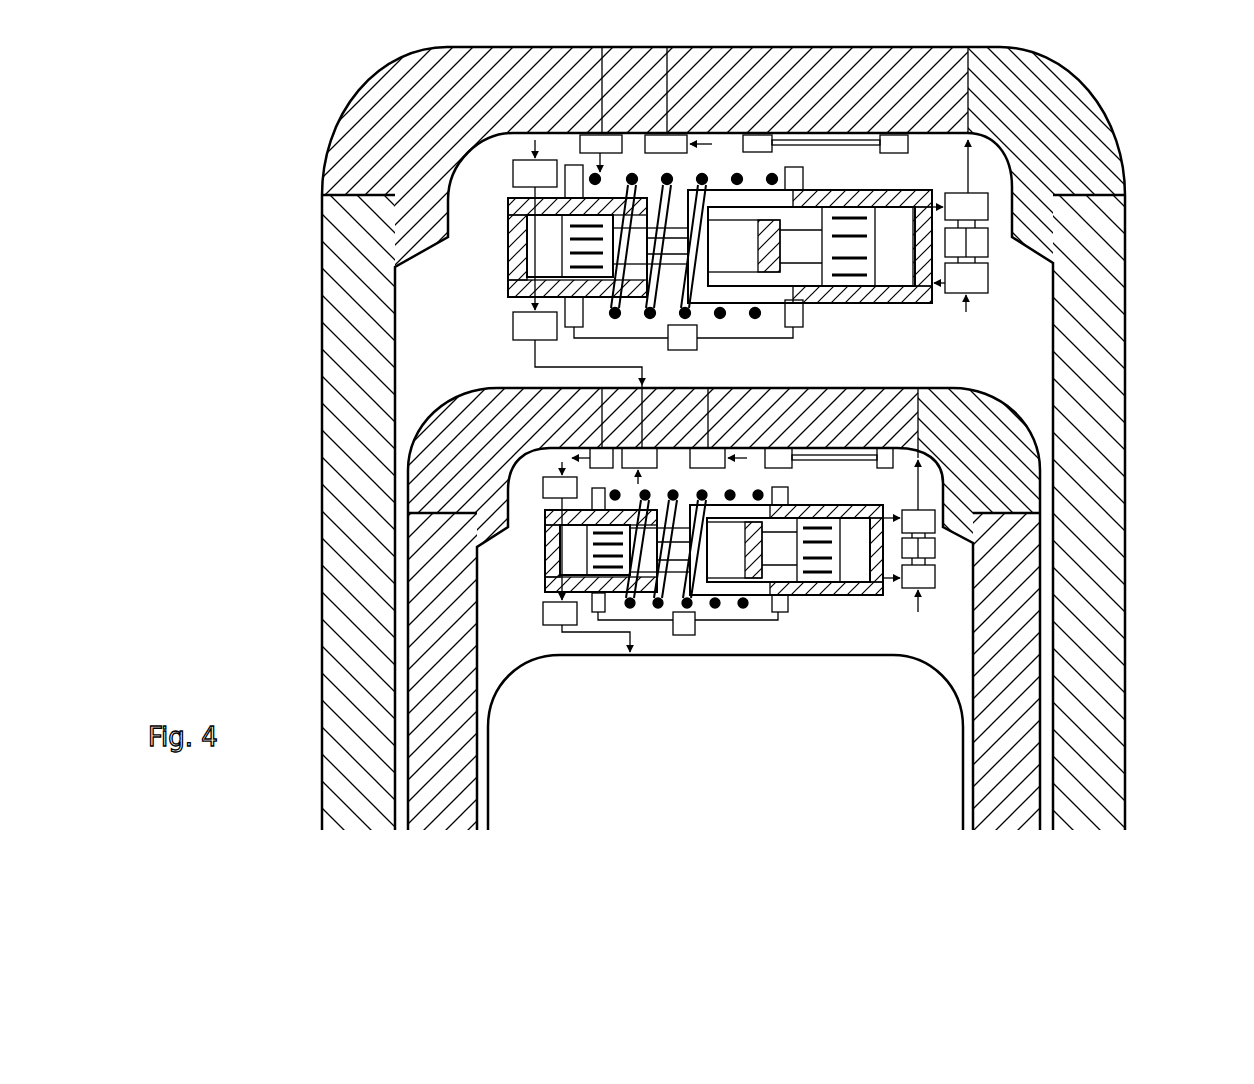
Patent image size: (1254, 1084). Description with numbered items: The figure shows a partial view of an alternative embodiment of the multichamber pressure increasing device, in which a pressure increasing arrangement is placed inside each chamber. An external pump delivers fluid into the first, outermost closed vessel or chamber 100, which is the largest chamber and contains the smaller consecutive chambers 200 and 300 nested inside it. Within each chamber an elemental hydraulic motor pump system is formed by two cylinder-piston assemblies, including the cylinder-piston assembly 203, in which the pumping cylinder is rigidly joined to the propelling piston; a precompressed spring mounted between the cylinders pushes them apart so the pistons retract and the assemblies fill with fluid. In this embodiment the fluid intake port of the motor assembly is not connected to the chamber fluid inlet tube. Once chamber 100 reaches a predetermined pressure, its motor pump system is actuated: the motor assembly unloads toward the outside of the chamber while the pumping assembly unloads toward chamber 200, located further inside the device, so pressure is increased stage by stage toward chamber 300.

The first, outermost closed vessel or chamber 100 is at (1067, 223).
The chamber 200 is at (980, 482).
The chamber 300 is at (850, 748).
The cylinder-piston assembly 203 is at (702, 199).